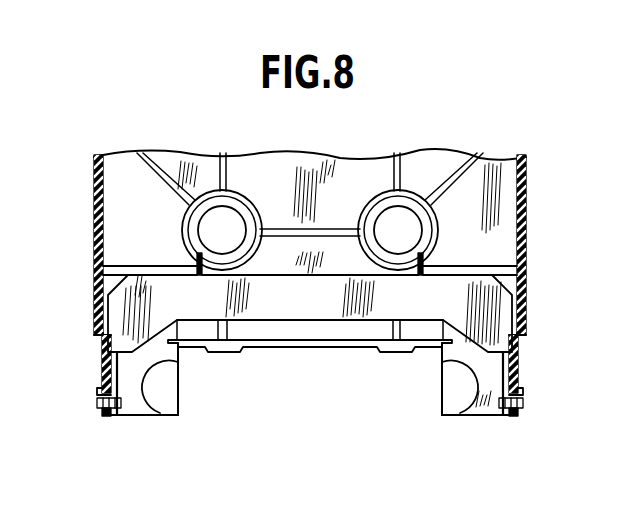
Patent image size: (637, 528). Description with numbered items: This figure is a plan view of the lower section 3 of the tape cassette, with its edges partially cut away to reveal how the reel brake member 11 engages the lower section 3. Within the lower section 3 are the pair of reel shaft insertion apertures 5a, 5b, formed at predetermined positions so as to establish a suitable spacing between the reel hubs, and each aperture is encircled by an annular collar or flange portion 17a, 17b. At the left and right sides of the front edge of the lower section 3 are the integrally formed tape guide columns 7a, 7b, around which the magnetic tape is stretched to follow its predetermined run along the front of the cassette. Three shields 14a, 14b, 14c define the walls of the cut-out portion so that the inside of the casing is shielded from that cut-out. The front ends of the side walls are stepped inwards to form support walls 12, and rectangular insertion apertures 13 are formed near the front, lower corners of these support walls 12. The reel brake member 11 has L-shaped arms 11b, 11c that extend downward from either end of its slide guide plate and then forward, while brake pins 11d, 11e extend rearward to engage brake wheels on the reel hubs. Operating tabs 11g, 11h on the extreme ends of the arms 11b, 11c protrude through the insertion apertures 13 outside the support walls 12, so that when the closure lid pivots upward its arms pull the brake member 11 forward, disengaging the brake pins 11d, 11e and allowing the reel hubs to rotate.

The lower section 3 is at (527, 228).
The reel shaft insertion aperture 5a is at (204, 222).
The reel shaft insertion aperture 5b is at (416, 222).
The tape guide column 7a is at (162, 414).
The tape guide column 7b is at (459, 414).
The reel brake member 11 is at (362, 321).
The L-shaped arm 11b is at (106, 372).
The L-shaped arm 11c is at (516, 374).
The brake pin 11d is at (201, 254).
The brake pin 11e is at (420, 254).
The operating tab 11g is at (97, 392).
The operating tab 11h is at (523, 395).
The support wall 12 is at (96, 344).
The insertion aperture 13 is at (107, 412).
The shield 14a is at (179, 380).
The shield 14b is at (442, 385).
The shield 14c is at (292, 350).
The annular collar portion 17a is at (182, 242).
The annular collar portion 17b is at (438, 238).